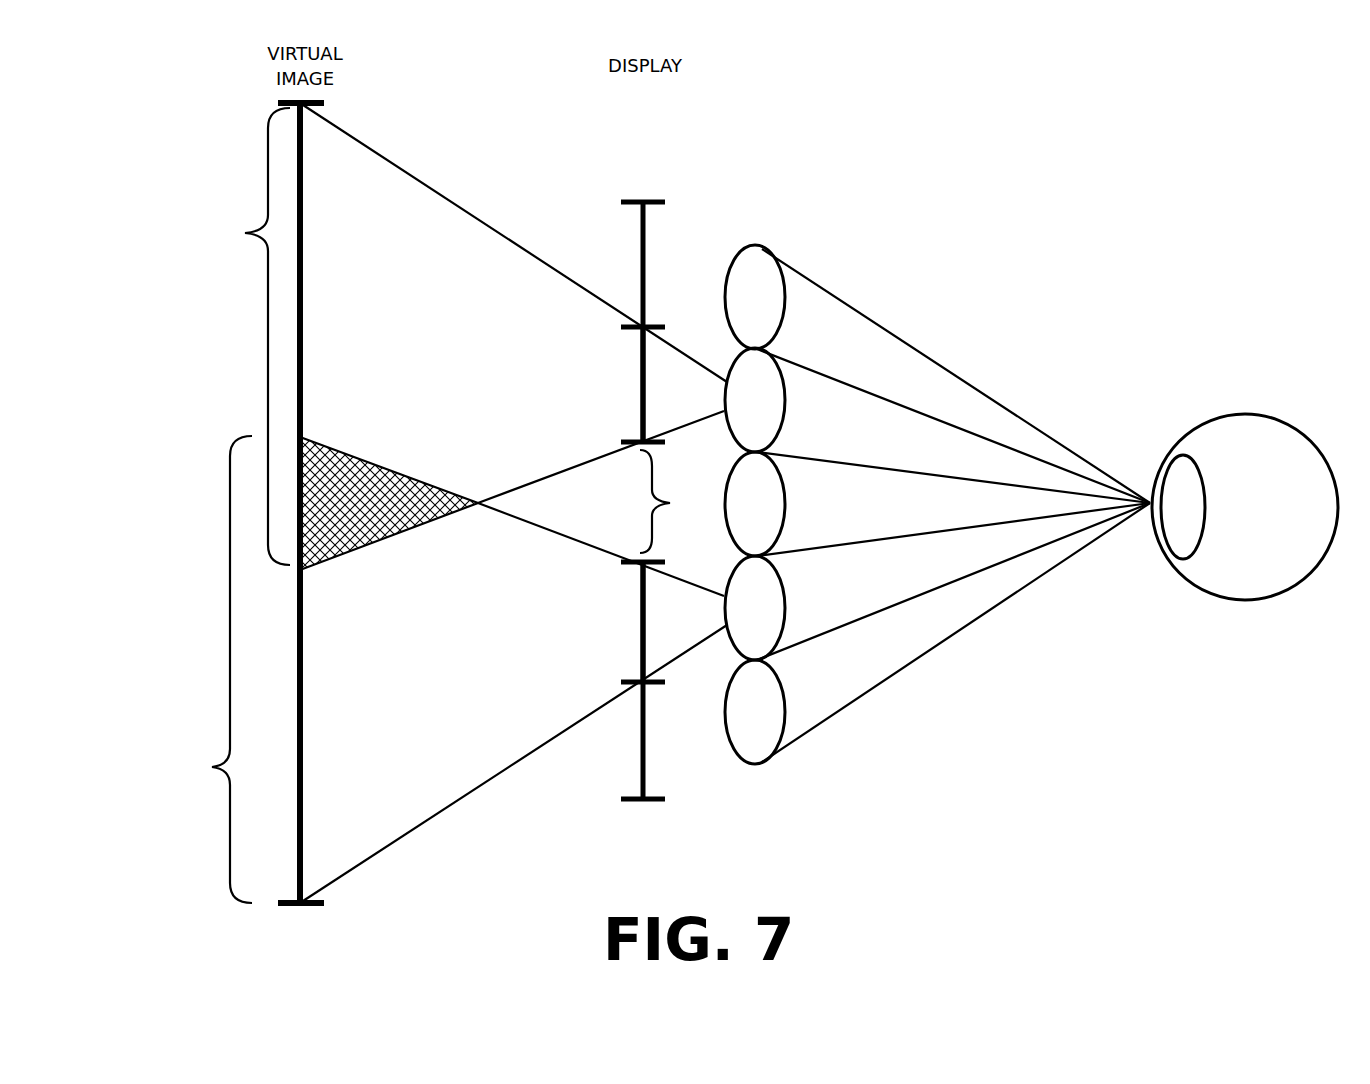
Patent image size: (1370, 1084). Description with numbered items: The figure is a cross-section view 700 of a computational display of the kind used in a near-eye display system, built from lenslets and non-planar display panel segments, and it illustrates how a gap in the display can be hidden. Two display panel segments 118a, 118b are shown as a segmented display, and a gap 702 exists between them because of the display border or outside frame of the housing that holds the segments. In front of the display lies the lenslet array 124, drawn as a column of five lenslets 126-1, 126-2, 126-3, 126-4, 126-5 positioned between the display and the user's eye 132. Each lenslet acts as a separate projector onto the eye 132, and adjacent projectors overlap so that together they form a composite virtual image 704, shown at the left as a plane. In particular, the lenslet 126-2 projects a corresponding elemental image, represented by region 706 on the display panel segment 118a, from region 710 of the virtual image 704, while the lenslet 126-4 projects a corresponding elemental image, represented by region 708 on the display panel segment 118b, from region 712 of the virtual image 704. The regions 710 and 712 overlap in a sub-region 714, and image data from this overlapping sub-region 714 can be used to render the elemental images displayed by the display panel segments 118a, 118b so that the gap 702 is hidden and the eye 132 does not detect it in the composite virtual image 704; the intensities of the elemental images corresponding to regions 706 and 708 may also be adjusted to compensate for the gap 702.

The cross-section view 700 is at (975, 204).
The gap 702 is at (668, 482).
The composite virtual image 704 is at (304, 924).
The region 706 is at (648, 397).
The region 708 is at (648, 624).
The region of the virtual image 710 is at (241, 336).
The region of the virtual image 712 is at (440, 504).
The sub-region 714 is at (206, 669).
The display panel segment 118a is at (646, 168).
The display panel segment 118b is at (647, 836).
The lenslet array 124 is at (780, 472).
The lenslet 126-1 is at (772, 315).
The lenslet 126-2 is at (772, 418).
The lenslet 126-3 is at (772, 508).
The lenslet 126-4 is at (772, 592).
The lenslet 126-5 is at (772, 688).
The eye 132 is at (1241, 413).